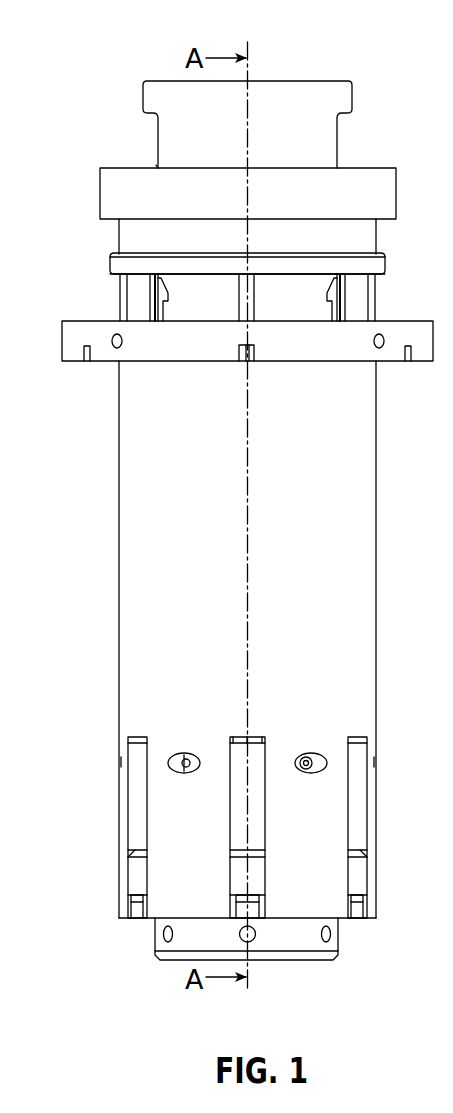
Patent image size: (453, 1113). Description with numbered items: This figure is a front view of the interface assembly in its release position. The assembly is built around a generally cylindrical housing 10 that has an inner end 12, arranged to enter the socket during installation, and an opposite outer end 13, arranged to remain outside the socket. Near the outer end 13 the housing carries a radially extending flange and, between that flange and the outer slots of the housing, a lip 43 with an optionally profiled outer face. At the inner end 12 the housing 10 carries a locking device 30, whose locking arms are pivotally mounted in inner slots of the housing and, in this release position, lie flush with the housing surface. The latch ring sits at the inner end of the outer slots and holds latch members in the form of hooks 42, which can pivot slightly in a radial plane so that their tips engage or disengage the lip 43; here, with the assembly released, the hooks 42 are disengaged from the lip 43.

The housing 10 is at (86, 489).
The inner end 12 is at (85, 856).
The outer end 13 is at (112, 66).
The locking device 30 is at (222, 813).
The hooks 42 is at (356, 303).
The lip 43 is at (142, 263).